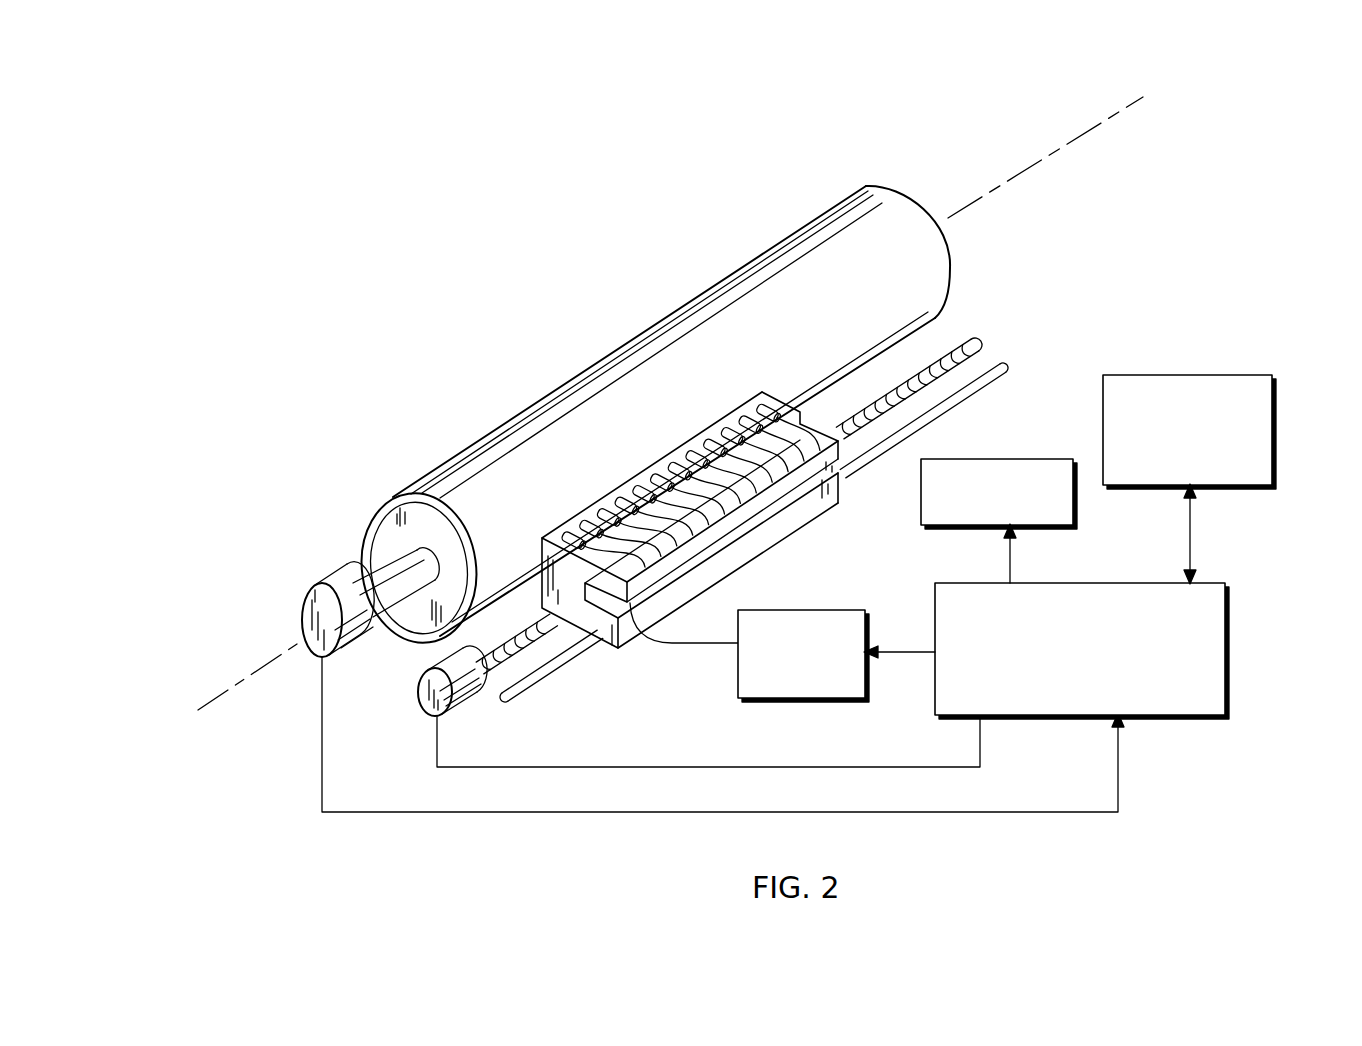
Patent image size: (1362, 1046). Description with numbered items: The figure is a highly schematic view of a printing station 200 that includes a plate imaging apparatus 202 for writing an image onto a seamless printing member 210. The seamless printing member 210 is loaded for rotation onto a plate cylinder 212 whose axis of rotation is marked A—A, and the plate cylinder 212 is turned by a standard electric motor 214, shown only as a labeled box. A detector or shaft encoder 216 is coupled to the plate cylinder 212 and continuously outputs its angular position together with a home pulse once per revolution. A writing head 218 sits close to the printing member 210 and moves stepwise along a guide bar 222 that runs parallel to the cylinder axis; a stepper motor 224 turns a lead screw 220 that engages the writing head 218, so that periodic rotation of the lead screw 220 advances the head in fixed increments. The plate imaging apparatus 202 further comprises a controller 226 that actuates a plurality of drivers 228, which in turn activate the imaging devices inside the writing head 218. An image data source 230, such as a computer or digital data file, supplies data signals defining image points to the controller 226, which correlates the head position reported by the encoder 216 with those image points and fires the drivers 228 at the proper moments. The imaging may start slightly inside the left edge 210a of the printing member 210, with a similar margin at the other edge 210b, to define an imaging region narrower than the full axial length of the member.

The printing station 200 is at (653, 152).
The plate imaging apparatus 202 is at (1214, 216).
The seamless printing member 210 is at (840, 197).
The edge of the printing member 210a is at (388, 503).
The other edge of the printing member 210b is at (897, 188).
The plate cylinder 212 is at (368, 538).
The electric motor 214 is at (995, 459).
The shaft encoder 216 is at (325, 583).
The writing head 218 is at (625, 480).
The lead screw 220 is at (958, 333).
The guide bar 222 is at (993, 365).
The stepper motor 224 is at (418, 680).
The controller 226 is at (1228, 642).
The drivers 228 is at (790, 610).
The image data source 230 is at (1273, 410).